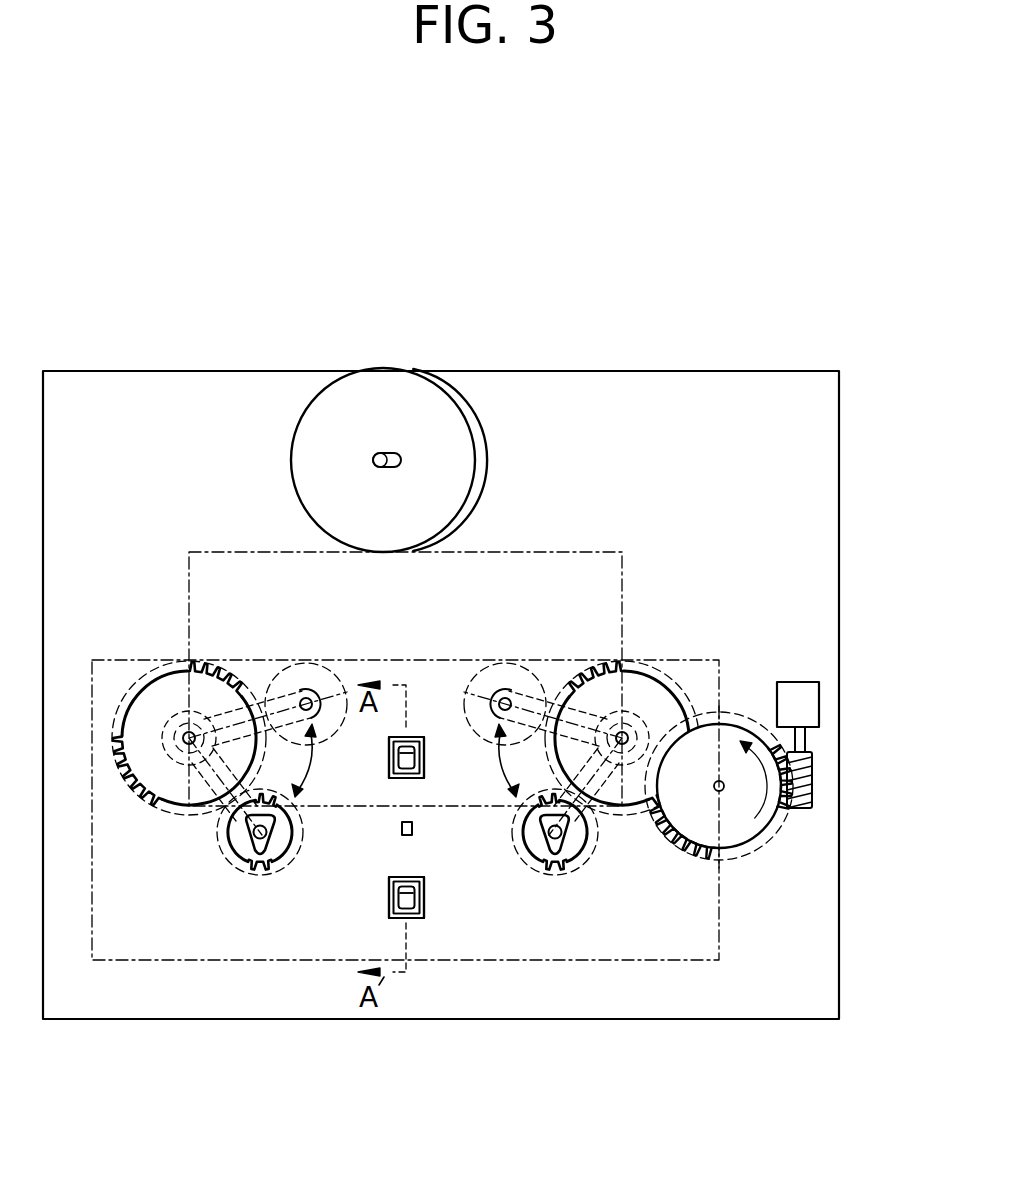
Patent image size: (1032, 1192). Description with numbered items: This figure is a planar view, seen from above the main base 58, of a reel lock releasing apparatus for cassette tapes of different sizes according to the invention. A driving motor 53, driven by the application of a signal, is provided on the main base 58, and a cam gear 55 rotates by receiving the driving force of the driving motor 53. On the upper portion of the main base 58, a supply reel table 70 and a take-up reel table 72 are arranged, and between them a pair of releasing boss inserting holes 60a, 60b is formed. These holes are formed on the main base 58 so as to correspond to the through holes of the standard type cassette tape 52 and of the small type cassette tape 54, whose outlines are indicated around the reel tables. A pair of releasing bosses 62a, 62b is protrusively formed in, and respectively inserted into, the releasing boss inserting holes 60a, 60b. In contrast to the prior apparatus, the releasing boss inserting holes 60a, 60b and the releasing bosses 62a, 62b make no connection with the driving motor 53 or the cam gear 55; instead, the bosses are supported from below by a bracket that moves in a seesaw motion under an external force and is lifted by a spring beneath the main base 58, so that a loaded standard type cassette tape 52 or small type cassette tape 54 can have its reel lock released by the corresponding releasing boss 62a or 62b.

The standard type cassette tape 52 is at (719, 952).
The driving motor 53 is at (819, 703).
The small type cassette tape 54 is at (622, 562).
The cam gear 55 is at (762, 841).
The main base 58 is at (715, 1019).
The supply reel table 70 is at (260, 872).
The take-up reel table 72 is at (555, 872).
The releasing boss inserting hole 60a is at (417, 895).
The releasing boss inserting hole 60b is at (417, 755).
The releasing boss 62a is at (410, 893).
The releasing boss 62b is at (410, 753).